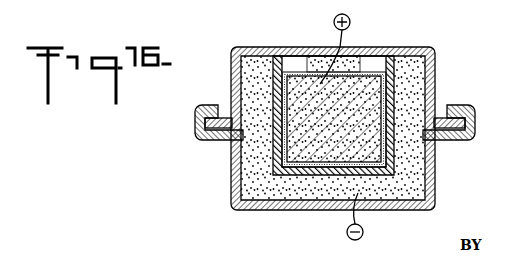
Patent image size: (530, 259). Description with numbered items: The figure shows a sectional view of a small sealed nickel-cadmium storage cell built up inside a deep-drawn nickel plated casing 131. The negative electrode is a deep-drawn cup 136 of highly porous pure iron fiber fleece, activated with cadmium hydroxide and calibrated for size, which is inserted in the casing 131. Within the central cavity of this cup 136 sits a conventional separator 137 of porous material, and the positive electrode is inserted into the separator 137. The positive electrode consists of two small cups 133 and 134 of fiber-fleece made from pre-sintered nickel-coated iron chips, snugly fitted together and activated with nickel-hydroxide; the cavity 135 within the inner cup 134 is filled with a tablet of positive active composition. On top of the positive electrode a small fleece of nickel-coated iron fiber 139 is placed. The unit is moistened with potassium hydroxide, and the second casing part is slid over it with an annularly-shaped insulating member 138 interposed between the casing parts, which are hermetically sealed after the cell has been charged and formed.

The casing 131 is at (437, 198).
The cup 133 is at (395, 98).
The cup 134 is at (385, 99).
The cavity 135 is at (340, 127).
The cup 136 is at (418, 170).
The separator 137 is at (300, 176).
The insulating member 138 is at (241, 77).
The fleece of nickel-coated iron fiber 139 is at (318, 62).